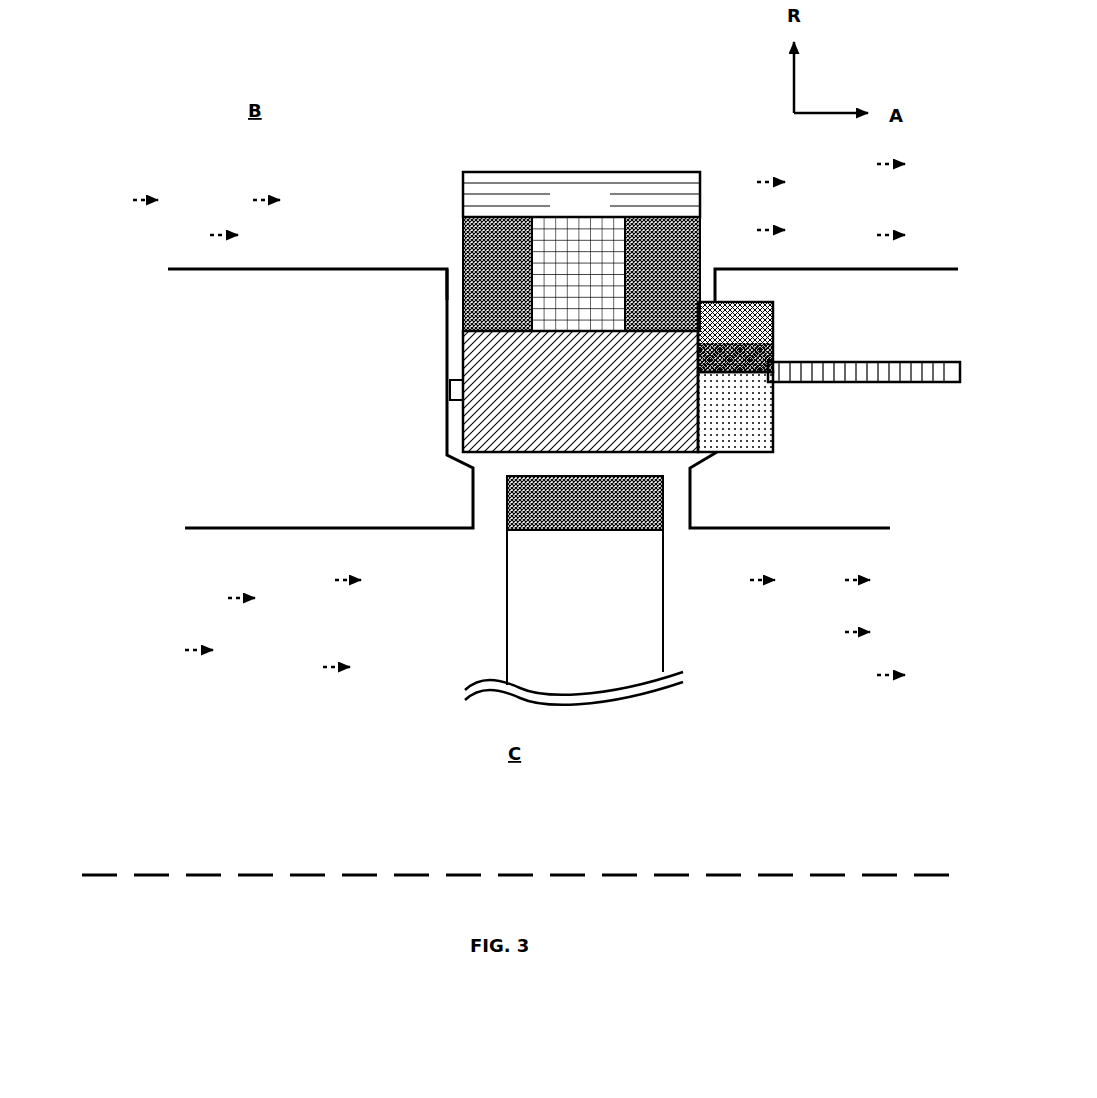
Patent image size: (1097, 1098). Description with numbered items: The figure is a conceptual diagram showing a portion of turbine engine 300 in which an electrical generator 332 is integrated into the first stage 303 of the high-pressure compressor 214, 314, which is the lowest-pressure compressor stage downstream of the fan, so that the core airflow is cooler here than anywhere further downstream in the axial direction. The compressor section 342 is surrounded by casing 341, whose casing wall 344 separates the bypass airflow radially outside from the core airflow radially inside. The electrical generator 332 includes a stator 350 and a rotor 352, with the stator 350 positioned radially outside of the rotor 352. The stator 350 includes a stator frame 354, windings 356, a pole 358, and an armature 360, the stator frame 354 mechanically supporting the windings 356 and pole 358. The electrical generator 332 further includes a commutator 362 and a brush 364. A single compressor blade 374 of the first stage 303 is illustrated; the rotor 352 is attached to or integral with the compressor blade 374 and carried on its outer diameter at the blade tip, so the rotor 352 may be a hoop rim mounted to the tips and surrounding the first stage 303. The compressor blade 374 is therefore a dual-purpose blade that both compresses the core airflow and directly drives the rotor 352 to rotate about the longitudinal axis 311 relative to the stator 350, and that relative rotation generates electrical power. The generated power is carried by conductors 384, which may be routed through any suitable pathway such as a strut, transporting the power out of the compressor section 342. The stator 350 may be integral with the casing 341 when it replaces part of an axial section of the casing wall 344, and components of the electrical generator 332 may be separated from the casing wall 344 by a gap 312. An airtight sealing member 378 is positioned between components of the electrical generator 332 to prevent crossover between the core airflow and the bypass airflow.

The turbine engine 300 is at (143, 172).
The casing 341 is at (167, 292).
The high-pressure compressor 214 is at (417, 265).
The casing wall 344 is at (275, 403).
The stator 350 is at (428, 356).
The electrical generator 332 is at (428, 446).
The stator frame 354 is at (581, 194).
The windings 356 is at (581, 274).
The pole 358 is at (578, 274).
The armature 360 is at (580, 391).
The airtight sealing member 378 is at (448, 388).
The brush 364 is at (735, 337).
The commutator 362 is at (735, 412).
The conductors 384 is at (880, 385).
The rotor 352 is at (585, 503).
The compressor blade 374 is at (574, 617).
The gap 312 is at (497, 489).
The high-pressure compressor 314 is at (727, 609).
The first stage 303 is at (692, 686).
The compressor section 342 is at (642, 732).
The longitudinal axis 311 is at (460, 873).